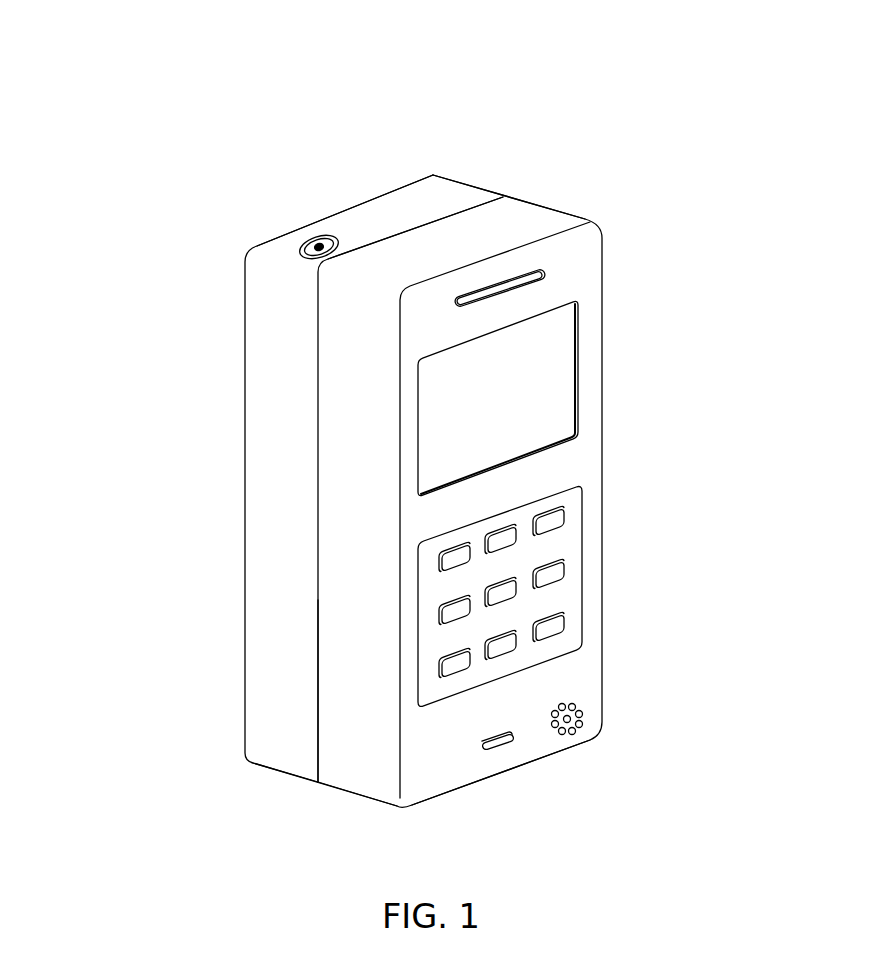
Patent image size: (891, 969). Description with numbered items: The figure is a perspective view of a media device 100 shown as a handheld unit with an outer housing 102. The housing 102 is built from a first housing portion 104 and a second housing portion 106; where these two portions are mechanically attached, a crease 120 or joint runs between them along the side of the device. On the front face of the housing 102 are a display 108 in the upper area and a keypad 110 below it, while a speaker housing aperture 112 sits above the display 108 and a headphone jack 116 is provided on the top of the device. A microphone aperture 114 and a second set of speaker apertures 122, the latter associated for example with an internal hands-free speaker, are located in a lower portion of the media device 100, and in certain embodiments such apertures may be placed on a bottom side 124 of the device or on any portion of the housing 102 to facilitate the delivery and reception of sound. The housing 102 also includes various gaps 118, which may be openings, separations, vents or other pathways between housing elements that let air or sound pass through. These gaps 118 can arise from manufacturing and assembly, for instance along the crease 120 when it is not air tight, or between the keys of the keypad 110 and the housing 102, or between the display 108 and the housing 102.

The media device 100 is at (758, 105).
The housing 102 is at (243, 622).
The first housing portion 104 is at (287, 777).
The second housing portion 106 is at (377, 800).
The display 108 is at (567, 360).
The keypad 110 is at (575, 533).
The speaker housing aperture 112 is at (532, 272).
The microphone aperture 114 is at (512, 743).
The headphone jack 116 is at (316, 244).
The gaps 118 is at (437, 221).
The crease 120 is at (317, 690).
The second speaker apertures 122 is at (585, 703).
The bottom side 124 is at (485, 806).